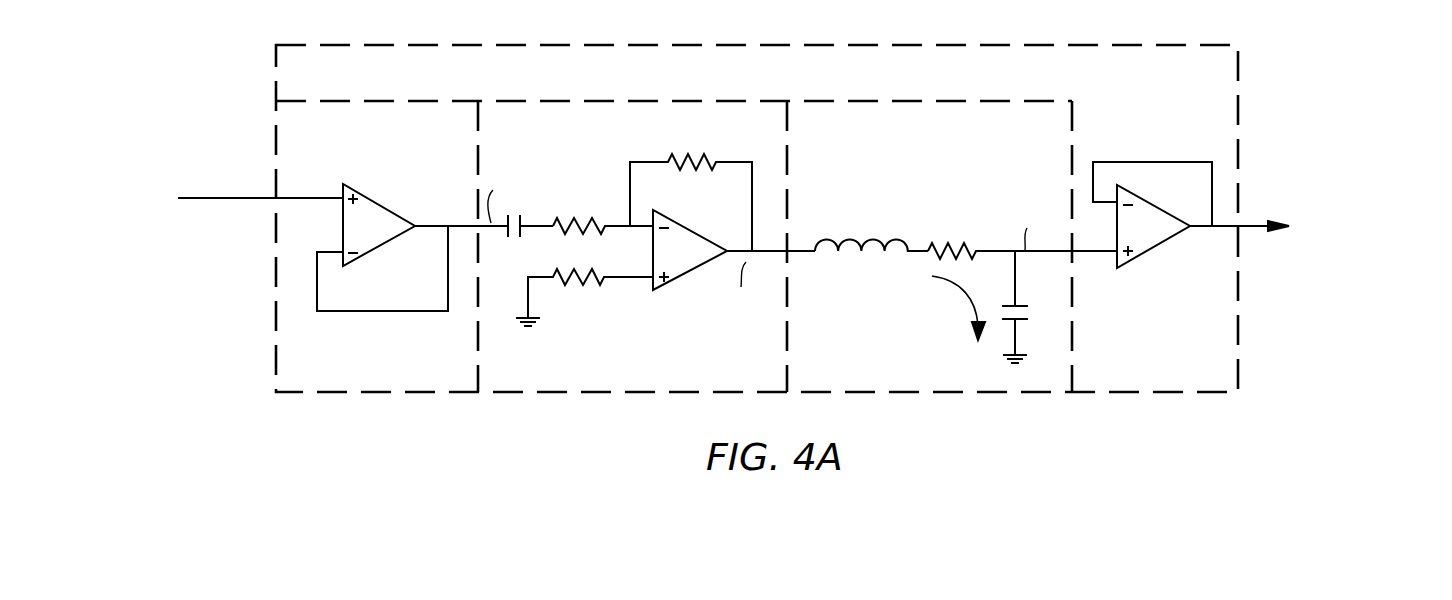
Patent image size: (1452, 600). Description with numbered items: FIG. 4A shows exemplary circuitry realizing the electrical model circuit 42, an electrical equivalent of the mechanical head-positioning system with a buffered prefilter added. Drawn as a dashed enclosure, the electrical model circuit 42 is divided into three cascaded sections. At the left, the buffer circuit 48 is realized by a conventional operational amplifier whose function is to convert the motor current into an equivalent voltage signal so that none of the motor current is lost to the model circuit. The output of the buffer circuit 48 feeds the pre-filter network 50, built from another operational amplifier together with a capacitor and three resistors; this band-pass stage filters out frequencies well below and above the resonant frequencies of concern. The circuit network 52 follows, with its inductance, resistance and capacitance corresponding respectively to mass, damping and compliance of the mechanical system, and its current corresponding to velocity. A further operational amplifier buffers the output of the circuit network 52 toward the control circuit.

The electrical model circuit 42 is at (1239, 140).
The buffer circuit 48 is at (378, 101).
The pre-filter network 50 is at (630, 101).
The circuit network 52 is at (893, 101).